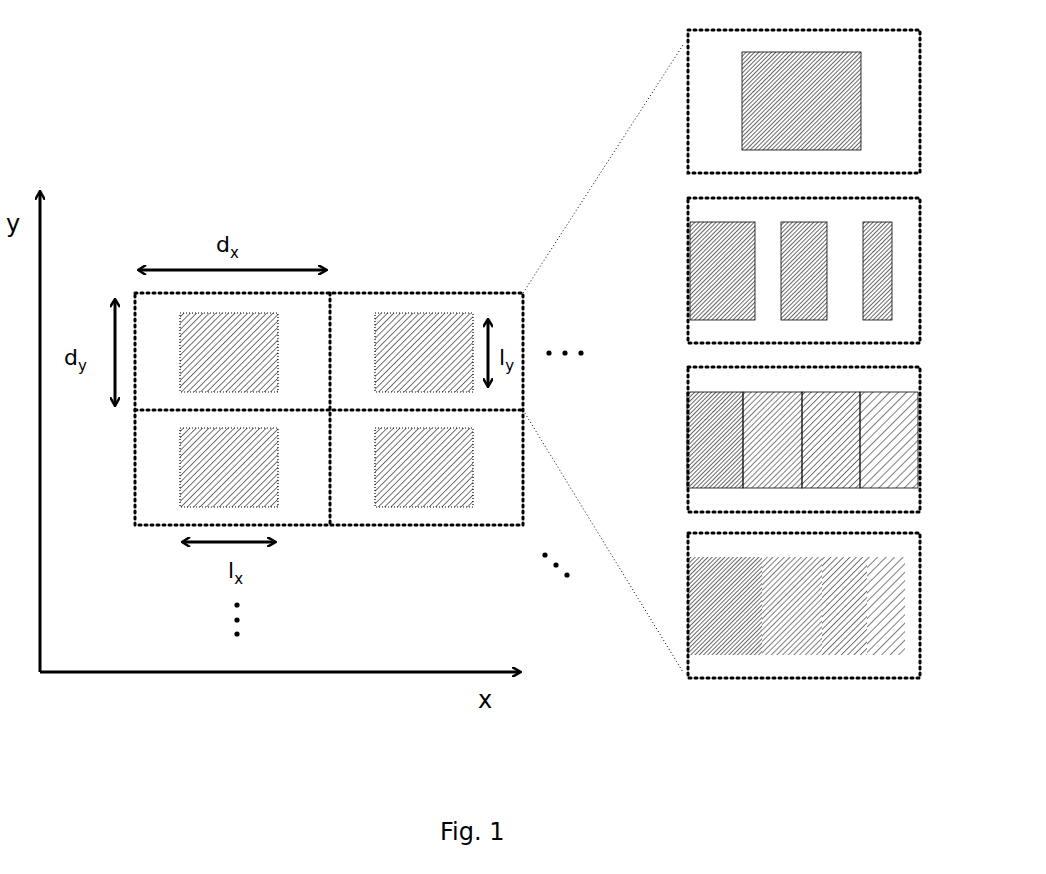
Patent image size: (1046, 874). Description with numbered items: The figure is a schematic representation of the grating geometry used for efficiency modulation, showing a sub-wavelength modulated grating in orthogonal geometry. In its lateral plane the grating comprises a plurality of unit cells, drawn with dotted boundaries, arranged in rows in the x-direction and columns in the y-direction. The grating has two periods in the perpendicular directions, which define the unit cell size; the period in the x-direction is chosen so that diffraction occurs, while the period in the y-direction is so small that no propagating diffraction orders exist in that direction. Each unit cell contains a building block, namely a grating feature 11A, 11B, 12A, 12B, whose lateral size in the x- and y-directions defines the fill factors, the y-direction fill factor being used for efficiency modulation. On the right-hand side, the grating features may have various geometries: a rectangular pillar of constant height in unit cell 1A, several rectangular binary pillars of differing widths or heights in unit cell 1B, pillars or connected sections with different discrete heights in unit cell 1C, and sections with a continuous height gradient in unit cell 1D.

The unit cell 1A is at (683, 44).
The unit cell 1B is at (683, 258).
The unit cell 1C is at (683, 380).
The unit cell 1D is at (683, 662).
The grating feature 11A is at (198, 468).
The grating feature 11B is at (413, 488).
The grating feature 12A is at (202, 326).
The grating feature 12B is at (423, 330).